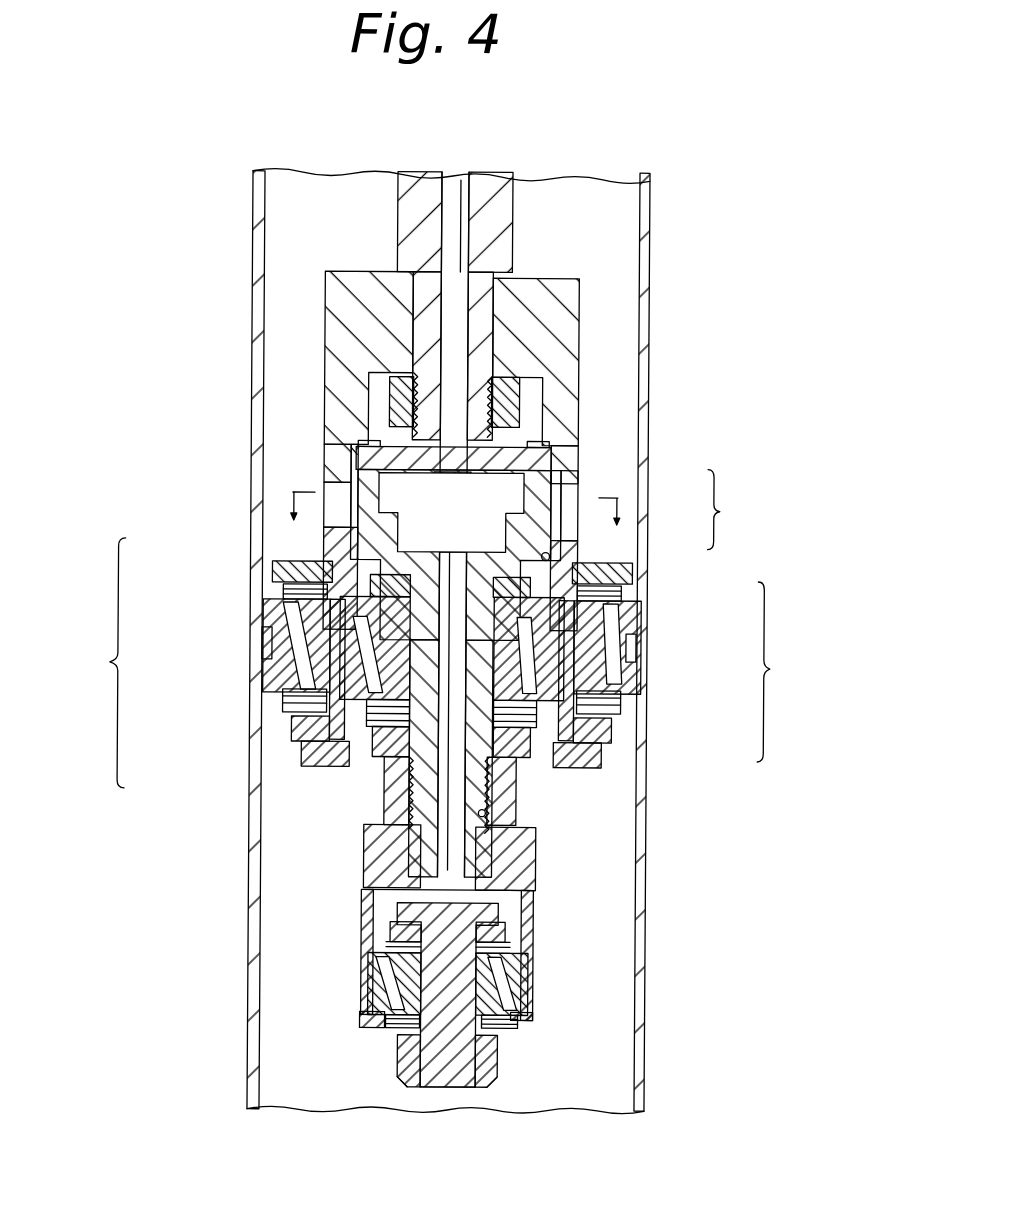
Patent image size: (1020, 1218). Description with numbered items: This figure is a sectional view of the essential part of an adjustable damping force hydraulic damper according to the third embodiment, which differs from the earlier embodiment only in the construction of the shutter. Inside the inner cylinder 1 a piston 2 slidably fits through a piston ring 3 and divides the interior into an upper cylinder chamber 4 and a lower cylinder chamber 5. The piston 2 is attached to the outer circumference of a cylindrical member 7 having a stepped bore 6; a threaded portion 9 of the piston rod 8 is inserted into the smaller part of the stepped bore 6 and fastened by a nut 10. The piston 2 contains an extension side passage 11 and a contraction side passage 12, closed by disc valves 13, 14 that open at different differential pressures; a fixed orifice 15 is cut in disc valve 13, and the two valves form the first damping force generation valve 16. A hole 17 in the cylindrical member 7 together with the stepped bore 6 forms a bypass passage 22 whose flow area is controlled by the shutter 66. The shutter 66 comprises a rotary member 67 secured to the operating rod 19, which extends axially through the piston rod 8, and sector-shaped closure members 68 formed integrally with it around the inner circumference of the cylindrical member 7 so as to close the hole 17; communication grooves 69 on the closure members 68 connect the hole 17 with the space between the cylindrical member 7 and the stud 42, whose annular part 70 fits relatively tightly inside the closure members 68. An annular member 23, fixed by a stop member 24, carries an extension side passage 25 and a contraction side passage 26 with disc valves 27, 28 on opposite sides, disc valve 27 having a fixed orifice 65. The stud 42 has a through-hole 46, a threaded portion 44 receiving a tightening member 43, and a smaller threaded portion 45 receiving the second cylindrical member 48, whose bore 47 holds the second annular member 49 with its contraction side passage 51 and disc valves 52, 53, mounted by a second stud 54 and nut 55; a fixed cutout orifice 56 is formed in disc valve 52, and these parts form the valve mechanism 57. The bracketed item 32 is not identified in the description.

The inner cylinder 1 is at (648, 236).
The piston 2 is at (638, 636).
The piston ring 3 is at (642, 658).
The upper cylinder chamber 4 is at (640, 193).
The lower cylinder chamber 5 is at (680, 1090).
The stepped bore 6 is at (573, 553).
The cylindrical member 7 is at (580, 298).
The piston rod 8 is at (483, 180).
The threaded portion 9 is at (513, 407).
The nut 10 is at (493, 390).
The extension side passage 11 is at (270, 675).
The contraction side passage 12 is at (628, 686).
The disc valve 13 is at (613, 707).
The disc valve 14 is at (623, 603).
The fixed orifice 15 is at (285, 700).
The first damping force generation valve 16 is at (651, 691).
The hole 17 is at (580, 490).
The operating rod 19 is at (410, 228).
The bypass passage 22 is at (737, 510).
The annular member 23 is at (290, 625).
The stop member 24 is at (305, 760).
The extension side passage 25 is at (290, 655).
The contraction side passage 26 is at (597, 767).
The disc valve 27 is at (305, 757).
The disc valve 28 is at (285, 592).
The left bearing assembly 32 is at (235, 663).
The stud 42 is at (402, 772).
The tightening member 43 is at (402, 805).
The threaded portion 44 is at (395, 845).
The threaded portion 45 is at (380, 900).
The through-hole 46 is at (487, 813).
The bore 47 is at (532, 905).
The second cylindrical member 48 is at (520, 850).
The second annular member 49 is at (537, 972).
The contraction side passage 51 is at (537, 1000).
The disc valve 52 is at (530, 1028).
The disc valve 53 is at (540, 940).
The second stud 54 is at (448, 1090).
The nut 55 is at (490, 1088).
The fixed cutout orifice 56 is at (385, 1027).
The valve mechanism 57 is at (392, 1072).
The fixed orifice 65 is at (295, 730).
The shutter 66 is at (352, 452).
The rotary member 67 is at (358, 462).
The closure members 68 is at (560, 457).
The communication grooves 69 is at (580, 463).
The annular part 70 is at (388, 515).